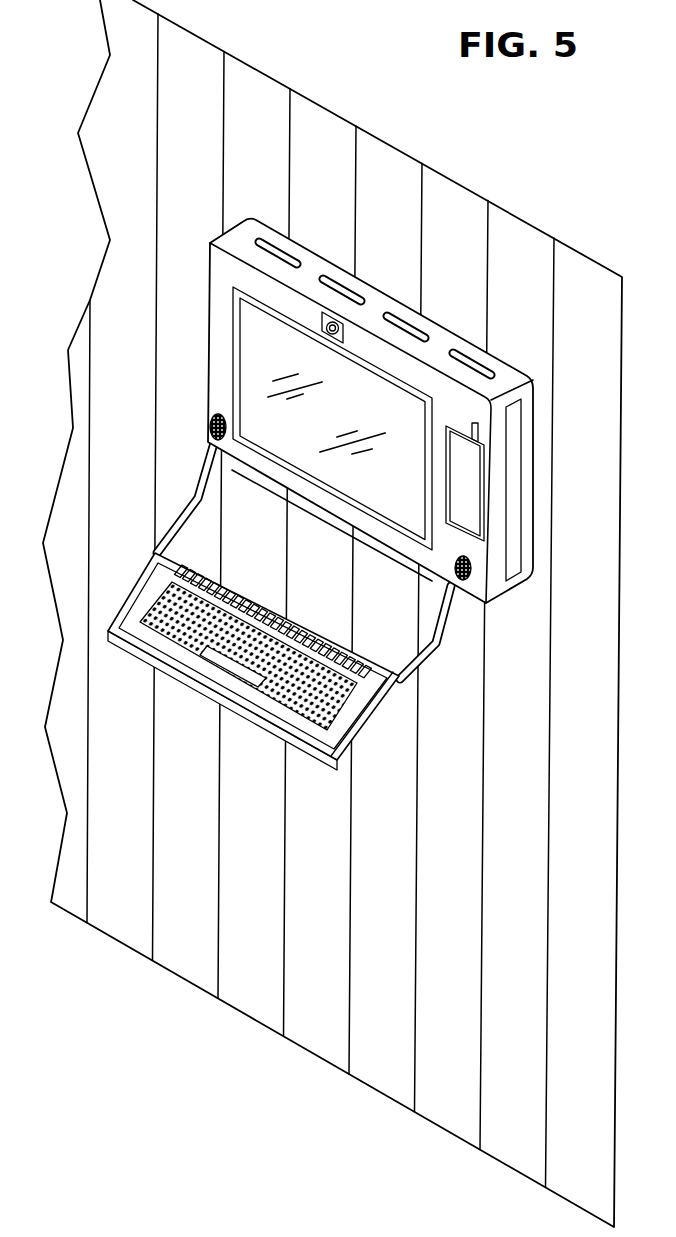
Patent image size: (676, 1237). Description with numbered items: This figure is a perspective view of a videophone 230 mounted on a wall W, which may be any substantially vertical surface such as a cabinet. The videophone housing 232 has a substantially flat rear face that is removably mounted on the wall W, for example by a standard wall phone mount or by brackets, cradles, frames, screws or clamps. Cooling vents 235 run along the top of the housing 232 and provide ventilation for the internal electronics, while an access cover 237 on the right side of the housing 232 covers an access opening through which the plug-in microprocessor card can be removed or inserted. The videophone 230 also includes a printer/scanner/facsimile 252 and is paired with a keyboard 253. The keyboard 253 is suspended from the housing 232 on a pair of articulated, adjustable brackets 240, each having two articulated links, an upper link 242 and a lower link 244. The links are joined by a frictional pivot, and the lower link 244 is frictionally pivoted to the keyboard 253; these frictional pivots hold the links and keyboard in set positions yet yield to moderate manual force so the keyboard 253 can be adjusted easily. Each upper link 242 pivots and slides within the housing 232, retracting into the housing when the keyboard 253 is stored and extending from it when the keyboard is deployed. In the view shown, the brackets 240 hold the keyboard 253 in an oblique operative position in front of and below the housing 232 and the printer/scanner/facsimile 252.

The wall W is at (519, 232).
The videophone 230 is at (382, 385).
The videophone housing 232 is at (543, 464).
The cooling vents 235 is at (362, 301).
The access cover 237 is at (512, 485).
The articulated adjustable brackets 240 is at (316, 571).
The upper link 242 is at (210, 470).
The lower link 244 is at (188, 508).
The printer/scanner/facsimile 252 is at (320, 527).
The keyboard 253 is at (127, 633).